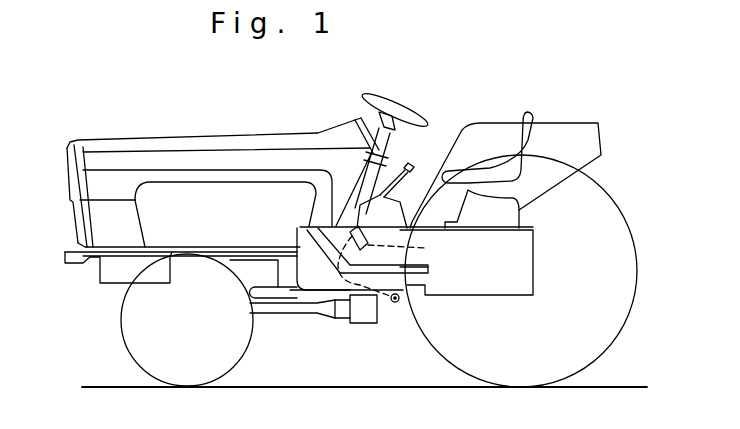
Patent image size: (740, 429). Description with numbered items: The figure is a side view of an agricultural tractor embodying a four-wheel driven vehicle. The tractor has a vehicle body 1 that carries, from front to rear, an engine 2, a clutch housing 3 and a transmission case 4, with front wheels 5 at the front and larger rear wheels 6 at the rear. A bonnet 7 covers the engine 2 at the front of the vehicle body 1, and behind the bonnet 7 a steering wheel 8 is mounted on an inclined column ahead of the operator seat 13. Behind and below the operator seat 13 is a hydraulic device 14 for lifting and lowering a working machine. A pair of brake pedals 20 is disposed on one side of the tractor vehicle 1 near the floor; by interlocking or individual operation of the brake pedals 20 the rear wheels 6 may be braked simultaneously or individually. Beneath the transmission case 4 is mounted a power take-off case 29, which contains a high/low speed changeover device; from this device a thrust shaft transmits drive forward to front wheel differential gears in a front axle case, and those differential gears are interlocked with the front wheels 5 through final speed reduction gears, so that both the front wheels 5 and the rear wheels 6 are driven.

The vehicle body 1 is at (453, 302).
The engine 2 is at (273, 292).
The clutch housing 3 is at (310, 283).
The transmission case 4 is at (478, 283).
The front wheels 5 is at (137, 332).
The rear wheels 6 is at (607, 313).
The bonnet 7 is at (224, 147).
The steering wheel 8 is at (398, 108).
The operator seat 13 is at (512, 127).
The hydraulic device 14 is at (503, 222).
The brake pedals 20 is at (396, 264).
The power take-off case 29 is at (368, 318).